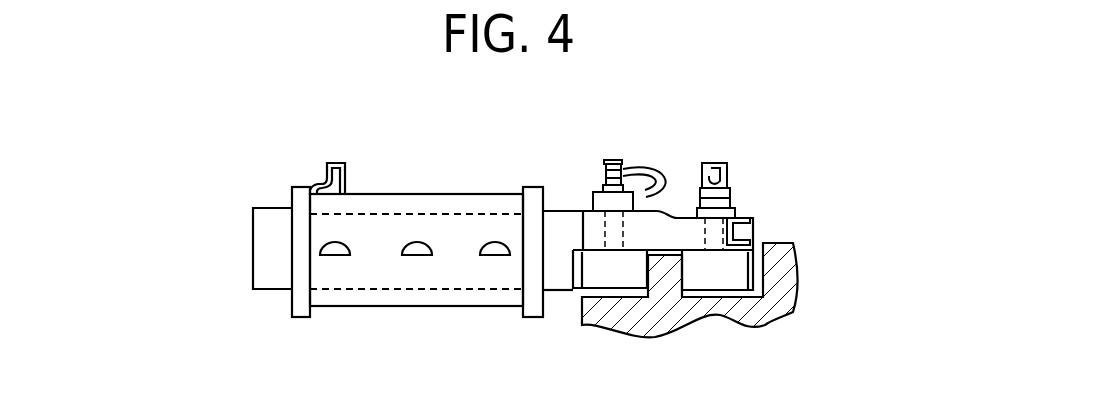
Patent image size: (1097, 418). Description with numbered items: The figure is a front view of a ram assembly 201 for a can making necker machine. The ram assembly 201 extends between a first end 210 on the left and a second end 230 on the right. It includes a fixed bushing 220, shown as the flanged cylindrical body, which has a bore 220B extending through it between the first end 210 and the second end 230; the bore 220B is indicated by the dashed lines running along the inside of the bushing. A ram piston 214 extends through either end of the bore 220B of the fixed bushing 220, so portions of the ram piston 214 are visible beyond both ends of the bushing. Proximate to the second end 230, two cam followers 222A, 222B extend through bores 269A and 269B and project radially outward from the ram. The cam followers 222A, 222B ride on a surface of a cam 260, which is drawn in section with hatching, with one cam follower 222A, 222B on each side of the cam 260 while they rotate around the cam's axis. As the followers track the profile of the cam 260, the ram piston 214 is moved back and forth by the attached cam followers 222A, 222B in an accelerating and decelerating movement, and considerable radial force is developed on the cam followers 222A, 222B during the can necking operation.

The ram assembly 201 is at (552, 140).
The first end 210 is at (208, 279).
The ram piston 214 is at (272, 275).
The fixed bushing 220 is at (388, 293).
The bore 220B is at (357, 295).
The cam follower 222A is at (598, 277).
The cam follower 222B is at (738, 268).
The second end 230 is at (779, 224).
The cam 260 is at (720, 313).
The bore 269A is at (596, 224).
The bore 269B is at (724, 227).